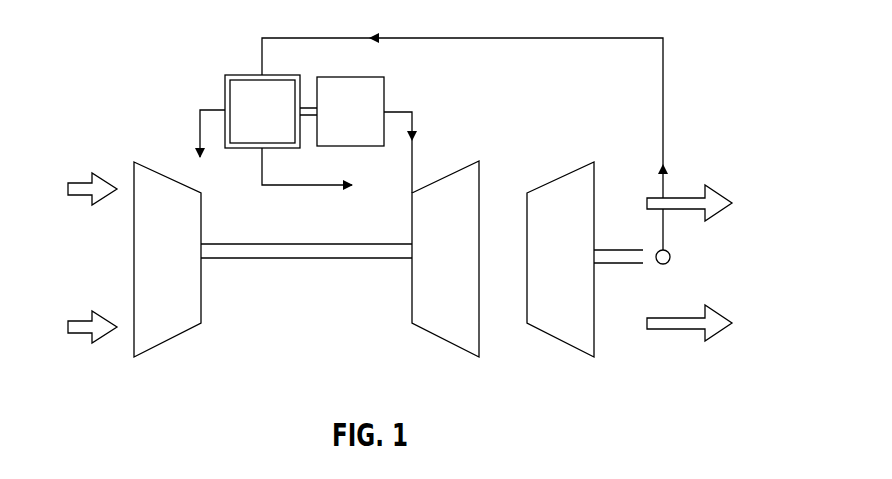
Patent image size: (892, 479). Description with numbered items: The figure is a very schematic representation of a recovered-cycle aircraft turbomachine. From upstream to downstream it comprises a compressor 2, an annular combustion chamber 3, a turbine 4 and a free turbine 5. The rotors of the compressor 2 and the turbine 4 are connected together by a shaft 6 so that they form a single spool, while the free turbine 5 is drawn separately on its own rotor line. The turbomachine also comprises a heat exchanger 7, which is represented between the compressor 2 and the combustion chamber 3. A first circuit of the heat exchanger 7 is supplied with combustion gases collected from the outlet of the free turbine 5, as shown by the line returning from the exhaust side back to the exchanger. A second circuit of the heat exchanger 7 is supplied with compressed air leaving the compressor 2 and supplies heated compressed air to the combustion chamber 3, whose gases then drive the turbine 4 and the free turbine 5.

The compressor 2 is at (157, 305).
The annular combustion chamber 3 is at (371, 100).
The turbine 4 is at (438, 317).
The free turbine 5 is at (555, 317).
The shaft 6 is at (300, 260).
The heat exchanger 7 is at (242, 100).